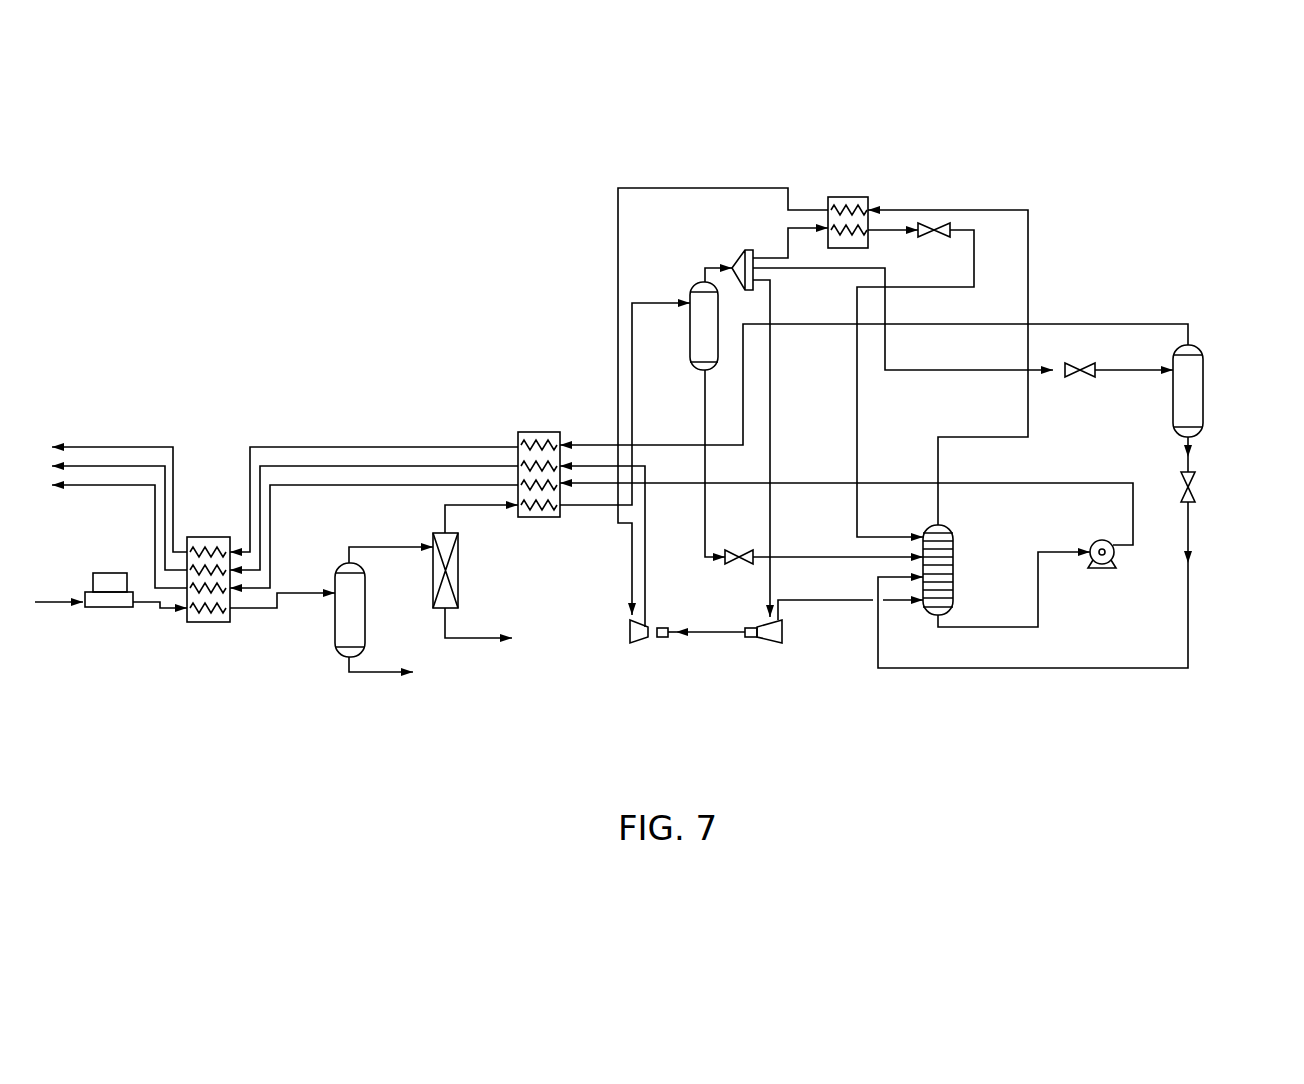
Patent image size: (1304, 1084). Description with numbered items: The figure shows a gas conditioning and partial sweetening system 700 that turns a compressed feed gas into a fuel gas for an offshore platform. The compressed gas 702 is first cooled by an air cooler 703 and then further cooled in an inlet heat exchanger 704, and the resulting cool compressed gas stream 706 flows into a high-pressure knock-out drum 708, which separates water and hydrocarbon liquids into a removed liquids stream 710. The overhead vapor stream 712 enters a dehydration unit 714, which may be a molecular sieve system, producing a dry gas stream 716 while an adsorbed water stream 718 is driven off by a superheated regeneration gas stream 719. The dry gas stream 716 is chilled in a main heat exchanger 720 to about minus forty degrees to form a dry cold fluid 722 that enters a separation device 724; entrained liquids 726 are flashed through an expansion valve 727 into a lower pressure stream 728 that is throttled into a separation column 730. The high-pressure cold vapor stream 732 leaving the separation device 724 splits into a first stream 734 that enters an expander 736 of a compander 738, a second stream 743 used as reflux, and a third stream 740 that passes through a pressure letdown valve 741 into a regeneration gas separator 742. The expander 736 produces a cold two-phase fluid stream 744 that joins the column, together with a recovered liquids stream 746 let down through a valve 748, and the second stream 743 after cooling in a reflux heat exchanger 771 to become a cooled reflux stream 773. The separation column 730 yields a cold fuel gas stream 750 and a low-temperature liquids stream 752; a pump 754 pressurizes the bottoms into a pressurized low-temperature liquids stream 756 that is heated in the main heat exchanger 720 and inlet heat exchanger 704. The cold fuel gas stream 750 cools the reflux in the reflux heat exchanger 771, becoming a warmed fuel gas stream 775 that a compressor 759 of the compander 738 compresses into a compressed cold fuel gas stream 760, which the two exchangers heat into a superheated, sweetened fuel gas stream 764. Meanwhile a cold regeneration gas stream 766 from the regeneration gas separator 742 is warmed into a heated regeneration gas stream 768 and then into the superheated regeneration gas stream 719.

The gas conditioning and partial sweetening system 700 is at (683, 792).
The compressed gas 702 is at (60, 600).
The air cooler 703 is at (115, 608).
The inlet heat exchanger 704 is at (200, 537).
The cool compressed gas stream 706 is at (278, 614).
The high-pressure knock-out drum 708 is at (385, 605).
The removed liquids stream 710 is at (380, 673).
The overhead vapor stream 712 is at (405, 546).
The dehydration unit 714 is at (458, 580).
The dry gas stream 716 is at (460, 508).
The adsorbed water stream 718 is at (490, 640).
The superheated regeneration gas stream 719 is at (118, 445).
The main heat exchanger 720 is at (540, 431).
The dry cold fluid 722 is at (633, 352).
The separation device 724 is at (690, 290).
The entrained liquids 726 is at (703, 400).
The expansion valve 727 is at (748, 565).
The lower pressure stream 728 is at (793, 556).
The separation column 730 is at (975, 538).
The high-pressure cold vapor stream 732 is at (705, 262).
The first stream 734 is at (793, 386).
The expander 736 is at (785, 642).
The compander 738 is at (709, 667).
The third stream 740 is at (935, 369).
The pressure letdown valve 741 is at (1085, 378).
The regeneration gas separator 742 is at (1228, 367).
The second stream 743 is at (788, 242).
The cold two-phase fluid stream 744 is at (793, 600).
The recovered liquids stream 746 is at (1215, 620).
The valve 748 is at (1198, 495).
The cold fuel gas stream 750 is at (997, 436).
The low-temperature liquids stream 752 is at (995, 628).
The pump 754 is at (1092, 541).
The pressurized low-temperature liquids stream 756 is at (118, 488).
The compressor 759 is at (630, 622).
The compressed cold fuel gas stream 760 is at (375, 464).
The superheated, sweetened fuel gas stream 764 is at (88, 464).
The cold regeneration gas stream 766 is at (968, 323).
The heated regeneration gas stream 768 is at (268, 446).
The reflux heat exchanger 771 is at (838, 197).
The cooled reflux stream 773 is at (887, 236).
The warmed fuel gas stream 775 is at (643, 188).